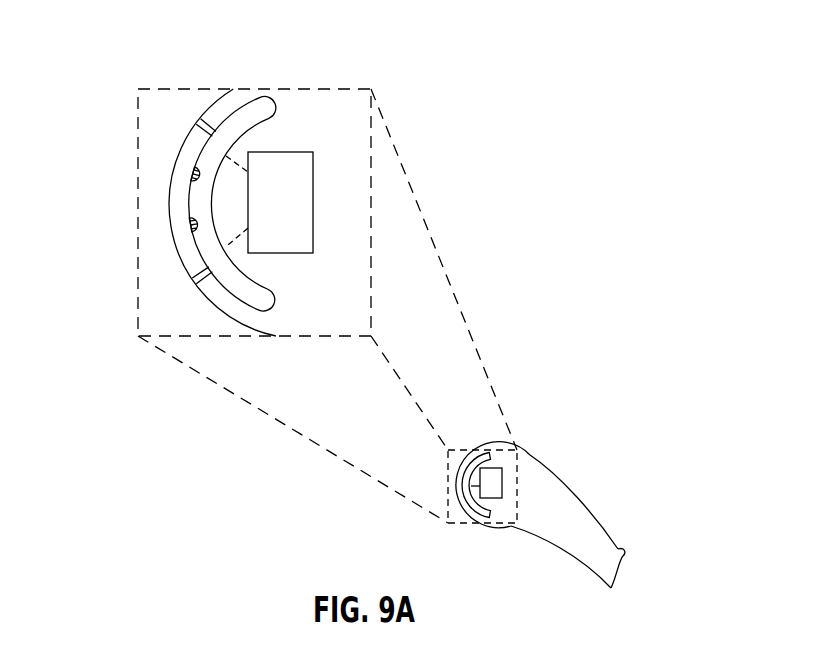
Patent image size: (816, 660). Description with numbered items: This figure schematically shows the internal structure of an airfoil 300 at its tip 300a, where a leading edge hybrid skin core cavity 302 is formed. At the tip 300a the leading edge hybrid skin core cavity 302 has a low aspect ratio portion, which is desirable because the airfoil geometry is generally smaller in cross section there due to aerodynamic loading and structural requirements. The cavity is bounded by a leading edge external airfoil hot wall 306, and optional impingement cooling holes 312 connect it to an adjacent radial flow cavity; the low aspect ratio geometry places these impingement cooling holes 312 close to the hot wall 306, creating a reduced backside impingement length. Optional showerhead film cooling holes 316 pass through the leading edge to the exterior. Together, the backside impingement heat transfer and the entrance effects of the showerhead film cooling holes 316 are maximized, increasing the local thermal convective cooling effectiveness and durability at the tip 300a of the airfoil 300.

The airfoil 300 is at (569, 505).
The tip 300a is at (520, 433).
The leading edge hybrid skin core cavity 302 is at (235, 128).
The leading edge external airfoil hot wall 306 is at (169, 191).
The impingement cooling holes 312 is at (243, 161).
The showerhead film cooling holes 316 is at (191, 281).